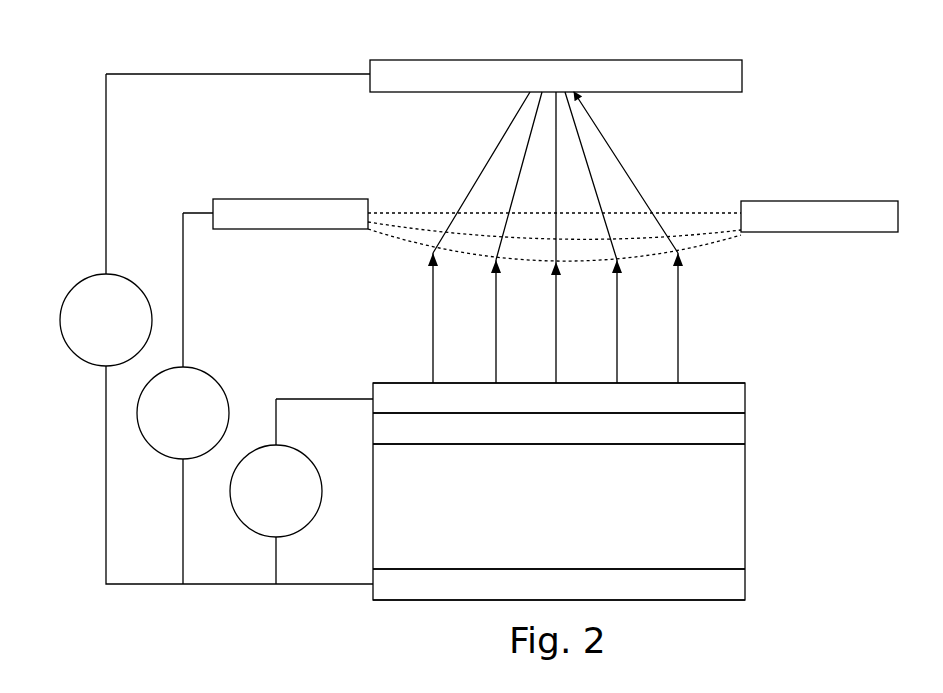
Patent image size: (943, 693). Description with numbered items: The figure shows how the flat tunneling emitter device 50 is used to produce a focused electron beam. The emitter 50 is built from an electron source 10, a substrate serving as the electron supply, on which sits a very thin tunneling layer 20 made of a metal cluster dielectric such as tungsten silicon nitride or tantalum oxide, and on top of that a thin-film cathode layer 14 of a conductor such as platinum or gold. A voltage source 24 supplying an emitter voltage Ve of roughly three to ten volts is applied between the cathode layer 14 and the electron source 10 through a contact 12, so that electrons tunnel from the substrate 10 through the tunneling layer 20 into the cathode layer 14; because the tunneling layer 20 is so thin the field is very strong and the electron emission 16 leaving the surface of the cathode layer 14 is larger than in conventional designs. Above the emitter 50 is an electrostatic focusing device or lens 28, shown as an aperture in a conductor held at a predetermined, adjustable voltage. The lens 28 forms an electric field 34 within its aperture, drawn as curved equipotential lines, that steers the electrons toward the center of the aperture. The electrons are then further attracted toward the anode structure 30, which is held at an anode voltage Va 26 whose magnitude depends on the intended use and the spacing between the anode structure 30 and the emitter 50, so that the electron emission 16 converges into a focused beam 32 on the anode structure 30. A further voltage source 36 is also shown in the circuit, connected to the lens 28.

The electron source 10 is at (745, 507).
The contact 12 is at (745, 583).
The cathode layer 14 is at (745, 397).
The electron emission 16 is at (720, 323).
The tunneling layer 20 is at (745, 430).
The voltage source 24 is at (303, 452).
The anode voltage 26 is at (84, 281).
The lens 28 is at (290, 199).
The anode structure 30 is at (742, 66).
The focused beam 32 is at (610, 111).
The electric field 34 is at (712, 252).
The lens voltage source Vl 36 is at (205, 372).
The emitter device 50 is at (362, 347).